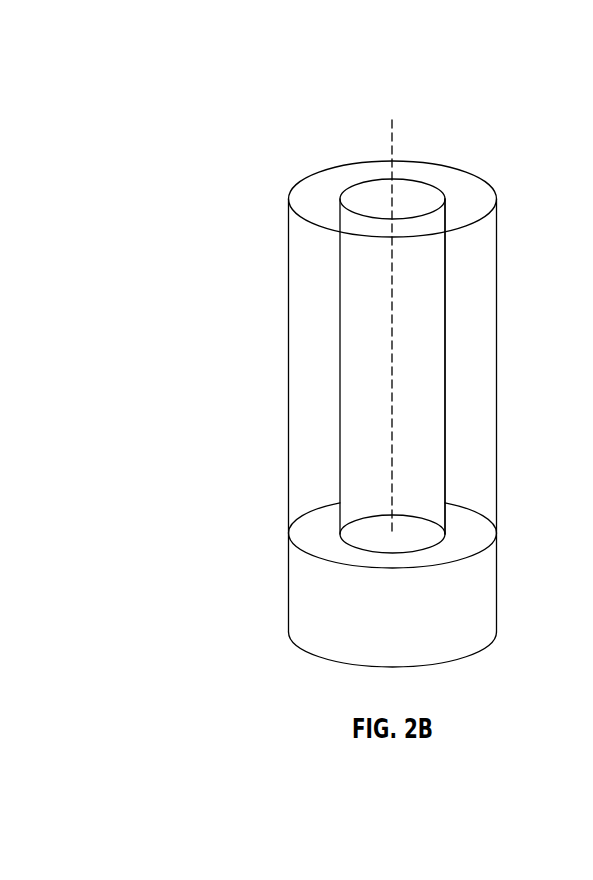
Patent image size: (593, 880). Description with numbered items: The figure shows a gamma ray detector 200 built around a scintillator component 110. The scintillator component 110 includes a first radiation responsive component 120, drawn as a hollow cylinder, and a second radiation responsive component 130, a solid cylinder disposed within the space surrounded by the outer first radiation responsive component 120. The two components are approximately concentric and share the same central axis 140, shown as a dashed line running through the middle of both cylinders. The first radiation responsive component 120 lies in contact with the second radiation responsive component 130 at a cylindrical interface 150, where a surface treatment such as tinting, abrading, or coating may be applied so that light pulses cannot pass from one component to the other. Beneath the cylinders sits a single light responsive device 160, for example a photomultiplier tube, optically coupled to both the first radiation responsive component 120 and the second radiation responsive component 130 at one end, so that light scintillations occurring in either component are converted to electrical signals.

The scintillator component 110 is at (376, 357).
The first radiation responsive component 120 is at (332, 404).
The second radiation responsive component 130 is at (384, 330).
The central axis 140 is at (388, 137).
The cylindrical interface 150 is at (445, 350).
The light responsive device 160 is at (411, 630).
The gamma ray detector 200 is at (391, 368).